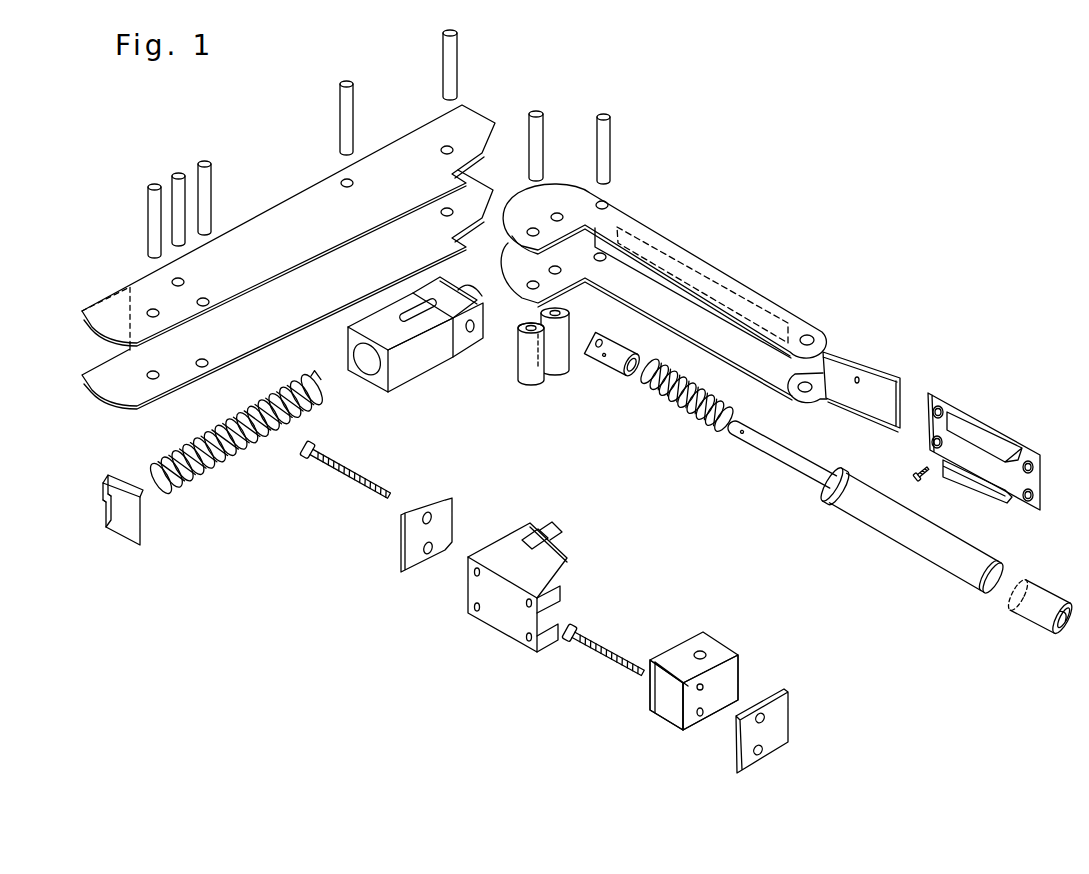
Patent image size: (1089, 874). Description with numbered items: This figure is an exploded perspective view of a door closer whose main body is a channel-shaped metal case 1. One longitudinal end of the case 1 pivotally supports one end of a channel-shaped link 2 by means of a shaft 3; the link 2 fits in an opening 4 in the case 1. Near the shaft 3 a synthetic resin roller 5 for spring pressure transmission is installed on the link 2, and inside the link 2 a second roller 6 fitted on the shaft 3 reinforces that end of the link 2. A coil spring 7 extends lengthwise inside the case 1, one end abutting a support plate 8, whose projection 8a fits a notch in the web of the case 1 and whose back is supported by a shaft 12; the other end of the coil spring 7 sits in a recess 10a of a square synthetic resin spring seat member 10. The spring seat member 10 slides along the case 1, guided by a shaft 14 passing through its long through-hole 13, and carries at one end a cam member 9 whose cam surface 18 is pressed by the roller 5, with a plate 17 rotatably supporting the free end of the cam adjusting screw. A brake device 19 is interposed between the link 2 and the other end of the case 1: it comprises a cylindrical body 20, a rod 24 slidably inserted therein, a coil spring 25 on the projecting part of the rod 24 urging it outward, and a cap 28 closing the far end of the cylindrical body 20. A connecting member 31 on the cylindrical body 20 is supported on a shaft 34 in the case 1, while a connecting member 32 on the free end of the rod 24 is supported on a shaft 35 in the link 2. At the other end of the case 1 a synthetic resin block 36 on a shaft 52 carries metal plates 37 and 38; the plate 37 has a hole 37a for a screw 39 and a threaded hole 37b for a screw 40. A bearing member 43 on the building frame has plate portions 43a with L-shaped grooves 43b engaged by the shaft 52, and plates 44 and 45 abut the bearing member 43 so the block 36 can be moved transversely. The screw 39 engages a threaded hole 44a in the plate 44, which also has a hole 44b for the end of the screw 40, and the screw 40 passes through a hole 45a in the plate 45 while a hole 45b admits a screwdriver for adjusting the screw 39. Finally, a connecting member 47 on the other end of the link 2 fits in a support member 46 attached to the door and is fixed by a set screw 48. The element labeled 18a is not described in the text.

The case 1 is at (281, 204).
The link 2 is at (733, 280).
The shaft 3 is at (458, 50).
The opening 4 is at (278, 337).
The roller 5 is at (522, 372).
The roller 6 is at (557, 364).
The coil spring 7 is at (233, 470).
The support plate 8 is at (86, 538).
The projection 8a is at (100, 505).
The cam member 9 is at (432, 337).
The spring seat member 10 is at (393, 351).
The recess 10a is at (366, 370).
The shaft 12 is at (177, 173).
The through-hole 13 is at (411, 309).
The shaft 14 is at (350, 82).
The plate 17 is at (461, 347).
The cam surface 18 is at (446, 280).
The rounded tab of cover plate 18a is at (478, 298).
The brake device 19 is at (864, 534).
The cylindrical body 20 is at (887, 523).
The rod 24 is at (768, 447).
The coil spring 25 is at (682, 407).
The cap 28 is at (995, 590).
The connecting member 31 is at (1033, 618).
The connecting member 32 is at (613, 367).
The shaft 34 is at (207, 160).
The shaft 35 is at (612, 128).
The block 36 is at (684, 681).
The plate 37 is at (738, 668).
The hole 37a is at (703, 717).
The threaded hole 37b is at (676, 710).
The plate 38 is at (678, 643).
The screw 39 is at (604, 645).
The screw 40 is at (333, 472).
The bearing member 43 is at (557, 581).
The plate portions 43a is at (508, 545).
The grooves 43b is at (540, 536).
The plate 44 is at (806, 707).
The threaded hole 44a is at (765, 757).
The hole 44b is at (792, 694).
The plate 45 is at (454, 544).
The hole 45a is at (427, 513).
The hole 45b is at (430, 553).
The support member 46 is at (987, 427).
The connecting member 47 is at (863, 357).
The set screw 48 is at (913, 468).
The shaft 52 is at (152, 184).